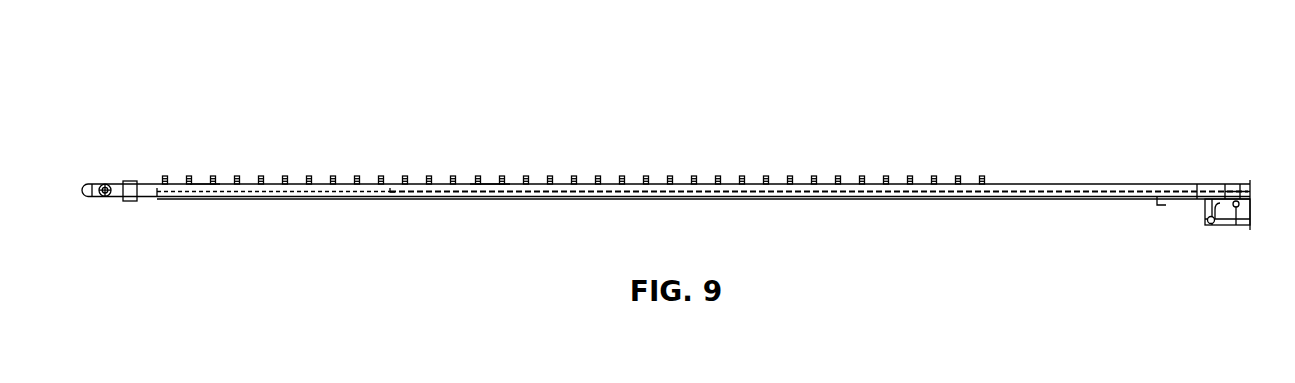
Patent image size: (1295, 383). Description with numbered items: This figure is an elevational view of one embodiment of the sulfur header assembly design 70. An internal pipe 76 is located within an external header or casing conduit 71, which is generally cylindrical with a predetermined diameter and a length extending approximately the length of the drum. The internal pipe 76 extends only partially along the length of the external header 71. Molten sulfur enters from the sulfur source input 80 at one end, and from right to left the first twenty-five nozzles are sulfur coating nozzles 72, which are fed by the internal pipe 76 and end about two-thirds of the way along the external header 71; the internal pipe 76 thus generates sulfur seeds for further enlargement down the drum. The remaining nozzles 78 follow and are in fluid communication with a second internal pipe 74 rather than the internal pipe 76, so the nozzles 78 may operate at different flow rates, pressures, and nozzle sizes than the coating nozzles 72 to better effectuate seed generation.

The sulfur header assembly design 70 is at (678, 132).
The external header or casing conduit 71 is at (145, 182).
The second internal pipe 74 is at (205, 182).
The internal pipe 76 is at (491, 182).
The nozzles 78 is at (238, 176).
The sulfur coating nozzles 72 is at (814, 176).
The sulfur source input 80 is at (1255, 176).